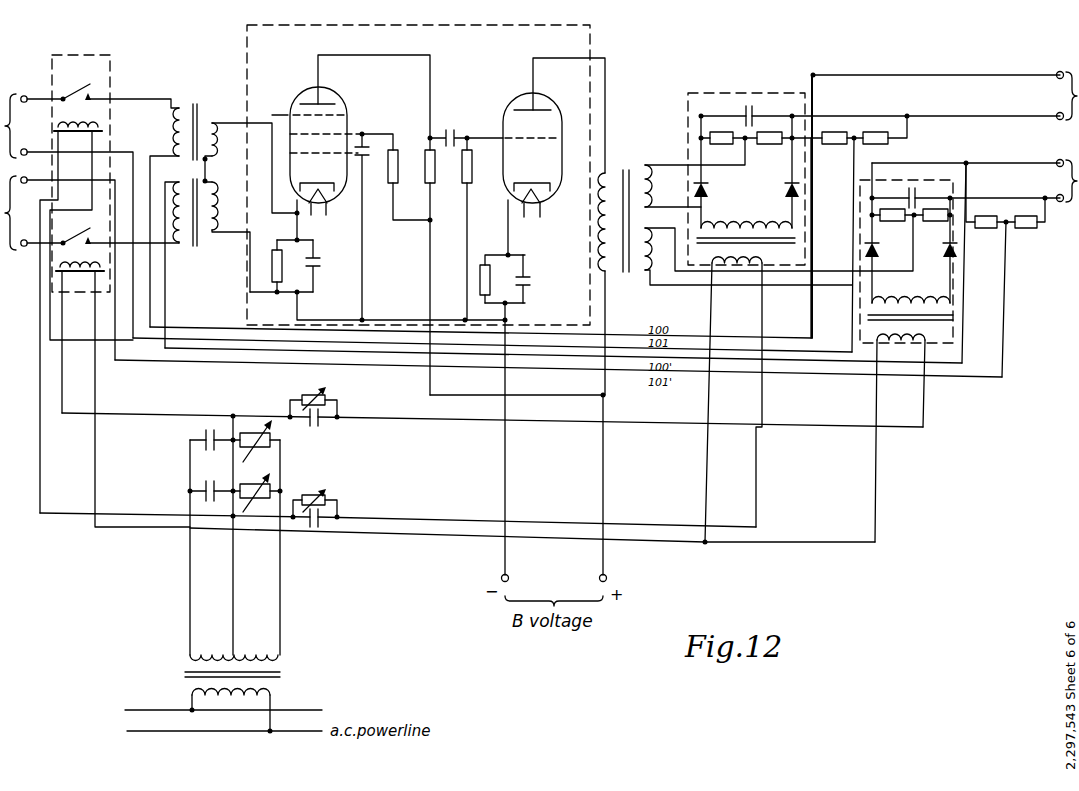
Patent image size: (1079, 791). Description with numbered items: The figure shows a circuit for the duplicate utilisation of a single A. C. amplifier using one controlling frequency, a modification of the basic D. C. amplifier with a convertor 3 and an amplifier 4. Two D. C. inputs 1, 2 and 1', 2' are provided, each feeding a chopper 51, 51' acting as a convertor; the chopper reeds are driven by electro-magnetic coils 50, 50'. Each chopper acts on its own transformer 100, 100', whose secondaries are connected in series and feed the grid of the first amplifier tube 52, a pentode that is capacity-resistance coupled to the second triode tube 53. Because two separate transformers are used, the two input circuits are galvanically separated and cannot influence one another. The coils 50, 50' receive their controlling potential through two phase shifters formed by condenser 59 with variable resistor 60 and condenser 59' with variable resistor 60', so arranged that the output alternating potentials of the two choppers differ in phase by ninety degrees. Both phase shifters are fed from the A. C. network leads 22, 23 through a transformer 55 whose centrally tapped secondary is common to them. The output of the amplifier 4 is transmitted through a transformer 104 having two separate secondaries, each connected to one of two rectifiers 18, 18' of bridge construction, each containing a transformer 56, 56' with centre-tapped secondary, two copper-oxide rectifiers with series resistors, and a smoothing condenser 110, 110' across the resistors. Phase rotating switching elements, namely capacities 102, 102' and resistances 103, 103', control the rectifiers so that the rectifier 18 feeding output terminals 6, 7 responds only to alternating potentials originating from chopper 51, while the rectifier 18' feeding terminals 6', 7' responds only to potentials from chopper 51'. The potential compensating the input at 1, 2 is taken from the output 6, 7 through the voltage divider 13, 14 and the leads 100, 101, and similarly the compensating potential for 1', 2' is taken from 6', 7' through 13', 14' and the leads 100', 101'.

The input terminal 1 is at (42, 89).
The input terminal 2 is at (77, 234).
The input terminal 1' is at (68, 259).
The input terminal 2' is at (41, 234).
The convertor 3 is at (81, 163).
The amplifier 4 is at (418, 166).
The output terminal 6 is at (937, 193).
The output terminal 7 is at (928, 115).
The output terminal 6' is at (968, 167).
The output terminal 7' is at (1007, 209).
The voltage divider resistor 13 is at (842, 147).
The voltage divider resistor 14 is at (875, 147).
The voltage divider resistor 13' is at (990, 207).
The voltage divider resistor 14' is at (1030, 224).
The rectifier 18 is at (746, 158).
The rectifier 18' is at (907, 241).
The A.C. network lead 22 is at (223, 703).
The A.C. network lead 23 is at (224, 724).
The electro-magnetic coil 50 is at (86, 310).
The electro-magnetic coil 50' is at (123, 394).
The chopper 51 is at (120, 87).
The chopper 51' is at (120, 229).
The pentode tube 52 is at (360, 147).
The triode tube 53 is at (554, 156).
The transformer 55 is at (242, 693).
The transformer 56 is at (746, 372).
The transformer 56' is at (910, 408).
The condenser 59 is at (211, 481).
The condenser 59' is at (206, 434).
The variable resistor 60 is at (256, 486).
The variable resistor 60' is at (265, 441).
The transformer 100 is at (181, 208).
The transformer 100' is at (190, 263).
The lead 101 is at (250, 164).
The lead 101' is at (231, 237).
The capacity 102 is at (323, 535).
The capacity 102' is at (326, 430).
The resistance 103 is at (326, 499).
The resistance 103' is at (326, 399).
The transformer 104 is at (755, 266).
The condenser 110 is at (746, 113).
The condenser 110' is at (911, 195).